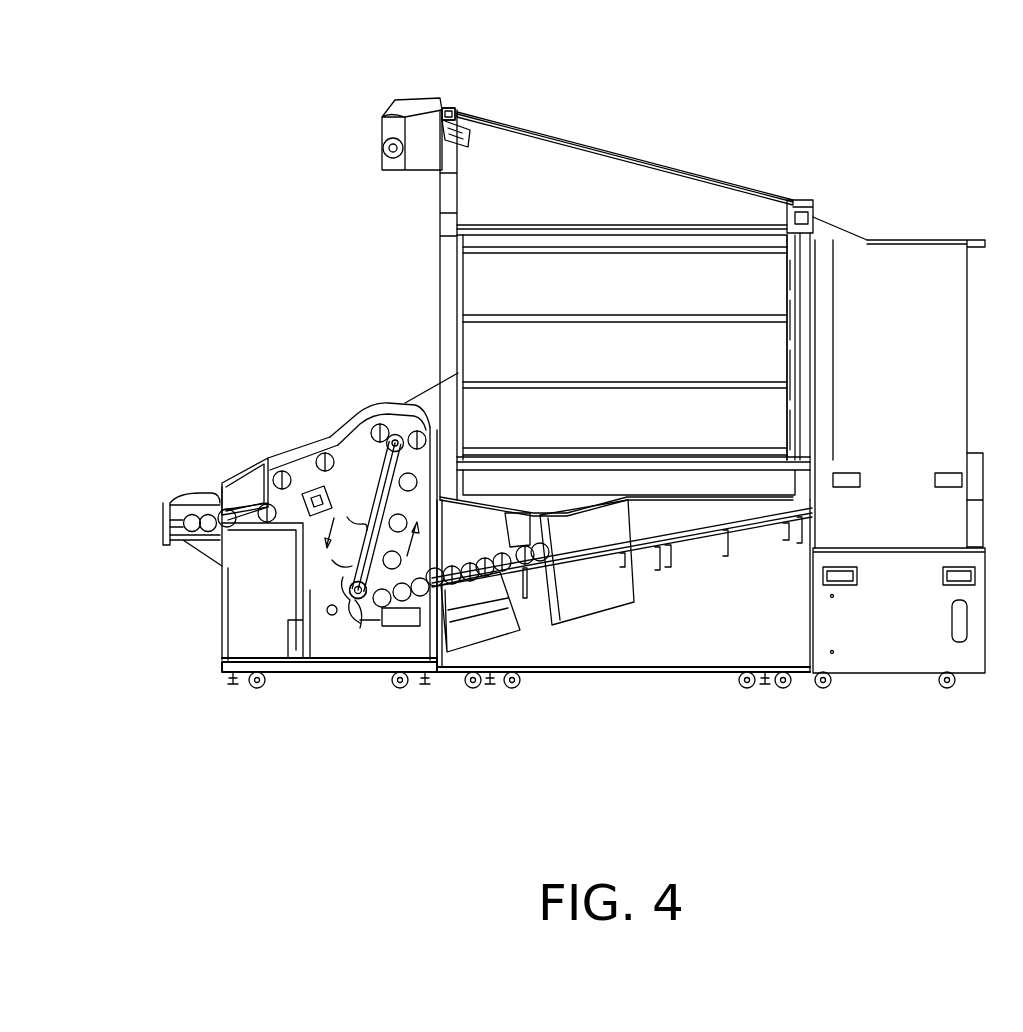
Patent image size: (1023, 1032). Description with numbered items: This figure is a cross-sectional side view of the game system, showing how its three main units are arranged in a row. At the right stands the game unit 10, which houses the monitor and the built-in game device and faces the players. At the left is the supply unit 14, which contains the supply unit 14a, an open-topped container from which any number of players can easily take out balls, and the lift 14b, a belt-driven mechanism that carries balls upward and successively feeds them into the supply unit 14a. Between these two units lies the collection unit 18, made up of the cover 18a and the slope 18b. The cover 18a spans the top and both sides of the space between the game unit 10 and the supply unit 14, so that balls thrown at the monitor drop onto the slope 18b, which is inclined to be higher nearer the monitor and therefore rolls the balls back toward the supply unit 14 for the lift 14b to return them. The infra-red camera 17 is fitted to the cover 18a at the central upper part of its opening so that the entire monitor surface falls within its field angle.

The game unit 10 is at (919, 709).
The supply unit 14 is at (240, 697).
The supply unit 14a is at (191, 492).
The lift 14b is at (357, 594).
The infra-red camera 17 is at (420, 75).
The collection unit 18 is at (688, 700).
The cover 18a is at (666, 160).
The slope 18b is at (583, 556).